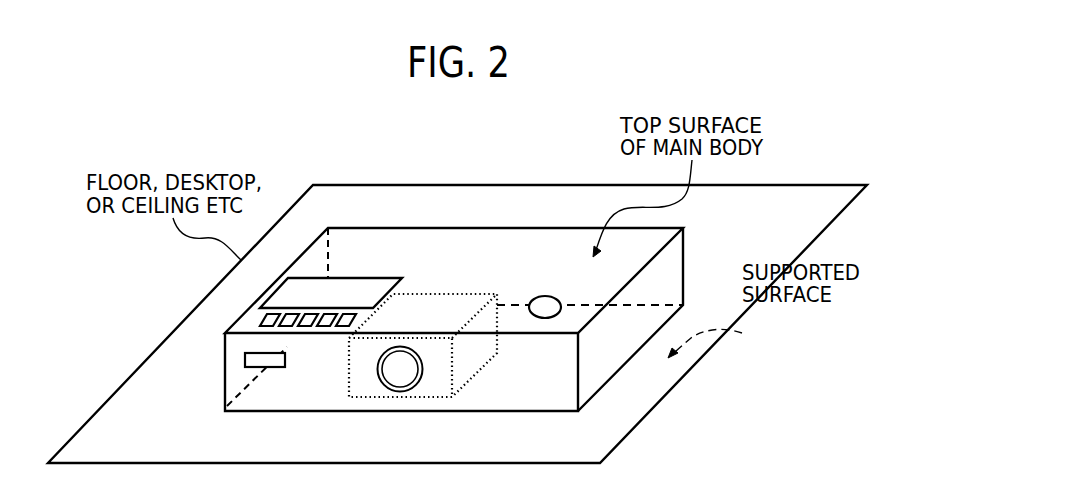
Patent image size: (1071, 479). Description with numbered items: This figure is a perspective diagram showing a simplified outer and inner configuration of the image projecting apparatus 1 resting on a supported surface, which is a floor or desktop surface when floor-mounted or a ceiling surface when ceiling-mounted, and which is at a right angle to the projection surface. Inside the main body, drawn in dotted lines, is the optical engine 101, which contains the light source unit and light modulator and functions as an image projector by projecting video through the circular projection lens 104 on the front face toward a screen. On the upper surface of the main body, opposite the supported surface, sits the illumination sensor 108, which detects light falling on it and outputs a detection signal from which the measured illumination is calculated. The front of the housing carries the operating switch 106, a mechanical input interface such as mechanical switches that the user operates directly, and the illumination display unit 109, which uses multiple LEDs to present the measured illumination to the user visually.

The image projecting apparatus 1 is at (510, 227).
The optical engine 101 is at (444, 292).
The projection lens 104 is at (363, 277).
The operating switch 106 is at (266, 327).
The illumination sensor 108 is at (545, 295).
The illumination display unit 109 is at (272, 368).